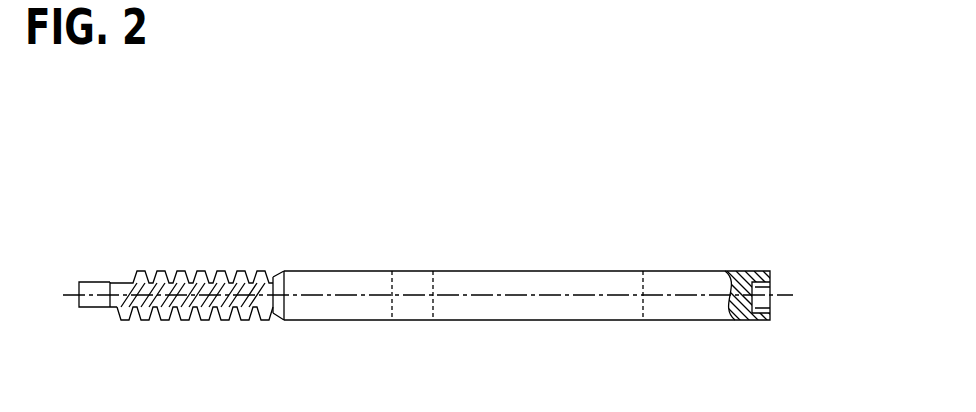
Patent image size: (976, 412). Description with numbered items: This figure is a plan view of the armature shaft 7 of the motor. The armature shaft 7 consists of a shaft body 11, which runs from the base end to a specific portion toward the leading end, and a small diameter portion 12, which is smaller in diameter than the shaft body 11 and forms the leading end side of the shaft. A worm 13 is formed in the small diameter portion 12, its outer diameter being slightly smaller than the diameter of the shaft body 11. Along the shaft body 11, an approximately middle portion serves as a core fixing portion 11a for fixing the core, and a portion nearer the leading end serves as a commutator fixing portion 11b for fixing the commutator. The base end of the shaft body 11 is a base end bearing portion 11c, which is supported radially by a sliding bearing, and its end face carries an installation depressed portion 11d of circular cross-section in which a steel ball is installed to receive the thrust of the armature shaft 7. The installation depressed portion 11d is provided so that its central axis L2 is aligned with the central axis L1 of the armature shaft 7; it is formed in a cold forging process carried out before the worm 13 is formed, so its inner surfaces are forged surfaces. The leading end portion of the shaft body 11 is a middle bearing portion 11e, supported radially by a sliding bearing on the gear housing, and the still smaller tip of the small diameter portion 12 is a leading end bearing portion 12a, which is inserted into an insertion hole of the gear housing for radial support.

The armature shaft 7 is at (665, 212).
The shaft body 11 is at (557, 294).
The core fixing portion 11a is at (572, 275).
The commutator fixing portion 11b is at (410, 277).
The base end bearing portion 11c is at (750, 271).
The installation depressed portion 11d is at (761, 288).
The middle bearing portion 11e is at (308, 270).
The small diameter portion 12 is at (194, 294).
The leading end bearing portion 12a is at (98, 308).
The worm 13 is at (160, 270).
The central axis of the armature shaft L1 is at (570, 272).
The central axis of the installation depressed portion L2 is at (783, 298).